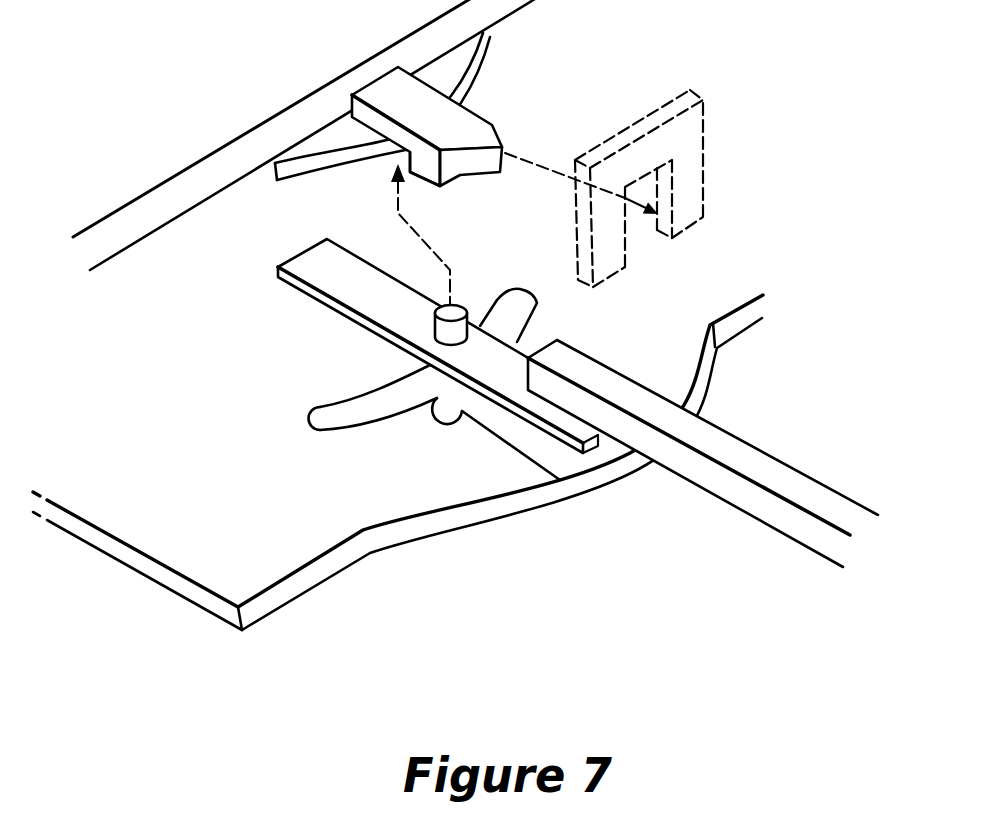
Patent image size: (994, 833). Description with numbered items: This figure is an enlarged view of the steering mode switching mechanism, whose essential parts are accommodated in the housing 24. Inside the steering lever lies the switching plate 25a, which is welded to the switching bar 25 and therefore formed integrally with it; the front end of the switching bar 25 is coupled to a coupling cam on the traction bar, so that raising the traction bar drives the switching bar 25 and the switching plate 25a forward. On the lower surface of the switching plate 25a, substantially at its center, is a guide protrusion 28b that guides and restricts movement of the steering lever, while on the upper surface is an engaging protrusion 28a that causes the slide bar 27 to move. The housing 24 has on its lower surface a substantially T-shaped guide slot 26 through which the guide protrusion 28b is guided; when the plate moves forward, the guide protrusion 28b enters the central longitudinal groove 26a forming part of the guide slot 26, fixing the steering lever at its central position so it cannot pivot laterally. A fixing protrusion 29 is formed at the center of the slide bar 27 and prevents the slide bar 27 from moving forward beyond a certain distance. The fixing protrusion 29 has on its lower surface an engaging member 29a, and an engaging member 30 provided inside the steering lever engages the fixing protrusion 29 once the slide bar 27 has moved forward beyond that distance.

The housing 24 is at (307, 538).
The switching bar 25 is at (768, 513).
The switching plate 25a is at (340, 285).
The guide slot 26 is at (500, 459).
The central longitudinal groove 26a is at (530, 428).
The slide bar 27 is at (210, 168).
The engaging protrusion 28a is at (443, 332).
The guide protrusion 28b is at (455, 393).
The fixing protrusion 29 is at (384, 124).
The engaging member 29a is at (350, 118).
The engaging member 30 is at (700, 160).